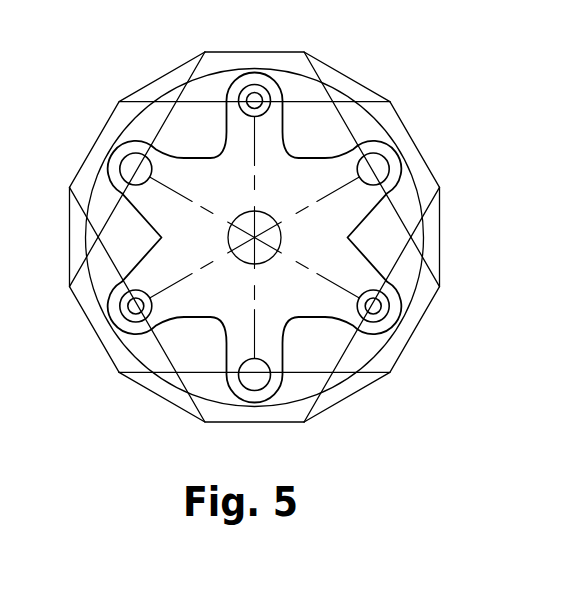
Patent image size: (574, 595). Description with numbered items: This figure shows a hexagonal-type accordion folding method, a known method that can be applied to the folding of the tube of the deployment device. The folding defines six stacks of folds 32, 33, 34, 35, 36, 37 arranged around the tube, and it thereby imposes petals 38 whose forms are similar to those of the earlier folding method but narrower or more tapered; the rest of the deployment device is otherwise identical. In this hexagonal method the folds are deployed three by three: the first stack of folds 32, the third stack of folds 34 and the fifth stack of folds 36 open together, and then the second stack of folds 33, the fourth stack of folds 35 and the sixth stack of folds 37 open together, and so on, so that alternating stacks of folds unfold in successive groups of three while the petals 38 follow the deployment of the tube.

The stack of folds 32 is at (370, 137).
The stack of folds 33 is at (424, 289).
The stack of folds 34 is at (193, 388).
The stack of folds 35 is at (96, 260).
The stack of folds 36 is at (140, 130).
The stack of folds 37 is at (300, 80).
The petal 38 is at (251, 82).